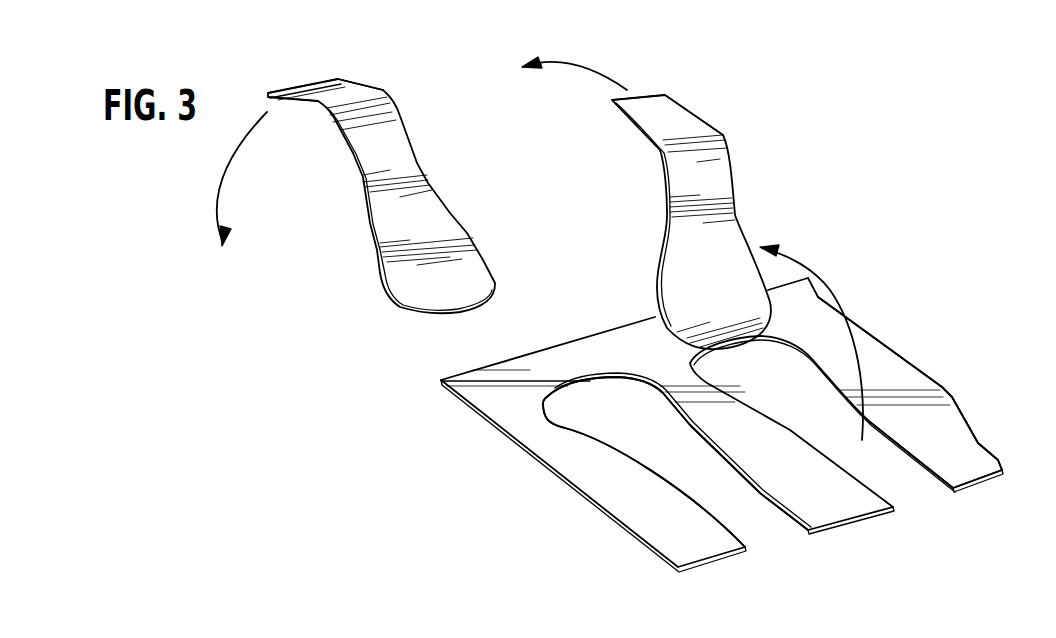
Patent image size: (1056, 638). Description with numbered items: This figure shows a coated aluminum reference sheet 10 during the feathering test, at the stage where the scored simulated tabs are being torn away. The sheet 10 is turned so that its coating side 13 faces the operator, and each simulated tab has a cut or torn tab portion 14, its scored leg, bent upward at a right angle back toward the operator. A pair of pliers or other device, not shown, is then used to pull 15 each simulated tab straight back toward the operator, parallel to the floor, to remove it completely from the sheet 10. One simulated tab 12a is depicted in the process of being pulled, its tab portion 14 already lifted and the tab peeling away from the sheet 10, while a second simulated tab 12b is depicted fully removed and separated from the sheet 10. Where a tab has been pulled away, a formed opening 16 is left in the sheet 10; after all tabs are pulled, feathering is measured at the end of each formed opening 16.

The sheet 10 is at (868, 353).
The simulated tab 12a is at (743, 139).
The simulated tab 12b is at (418, 135).
The coating side 13 is at (901, 383).
The tab portion 14 is at (352, 90).
The pull 15 is at (827, 278).
The formed opening 16 is at (633, 433).